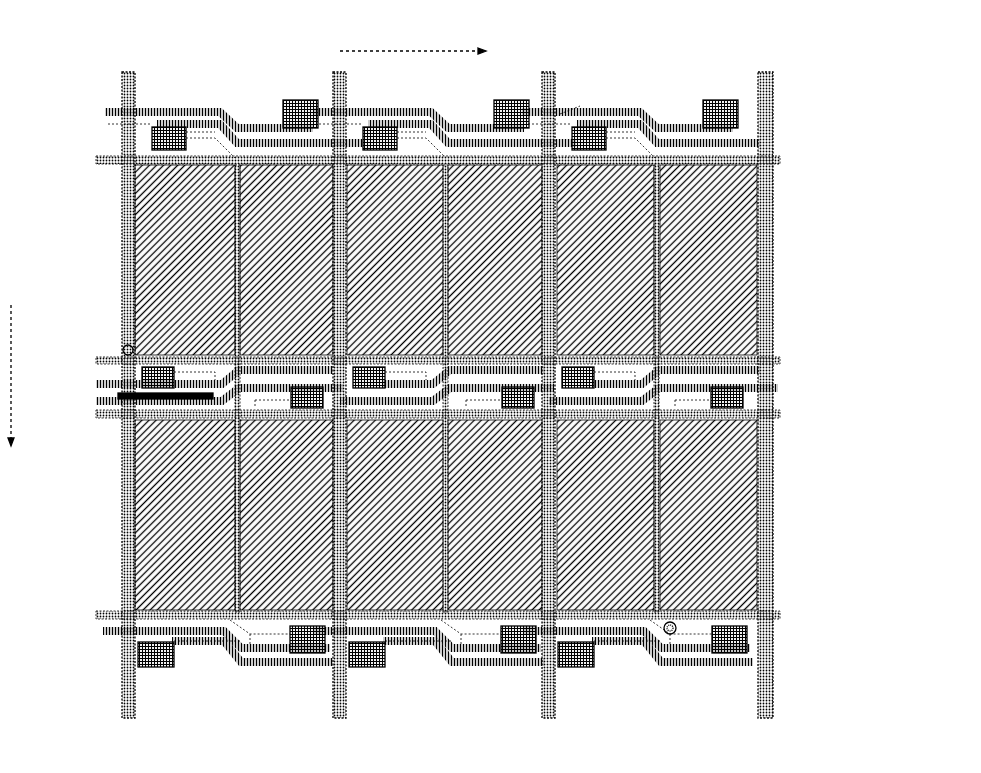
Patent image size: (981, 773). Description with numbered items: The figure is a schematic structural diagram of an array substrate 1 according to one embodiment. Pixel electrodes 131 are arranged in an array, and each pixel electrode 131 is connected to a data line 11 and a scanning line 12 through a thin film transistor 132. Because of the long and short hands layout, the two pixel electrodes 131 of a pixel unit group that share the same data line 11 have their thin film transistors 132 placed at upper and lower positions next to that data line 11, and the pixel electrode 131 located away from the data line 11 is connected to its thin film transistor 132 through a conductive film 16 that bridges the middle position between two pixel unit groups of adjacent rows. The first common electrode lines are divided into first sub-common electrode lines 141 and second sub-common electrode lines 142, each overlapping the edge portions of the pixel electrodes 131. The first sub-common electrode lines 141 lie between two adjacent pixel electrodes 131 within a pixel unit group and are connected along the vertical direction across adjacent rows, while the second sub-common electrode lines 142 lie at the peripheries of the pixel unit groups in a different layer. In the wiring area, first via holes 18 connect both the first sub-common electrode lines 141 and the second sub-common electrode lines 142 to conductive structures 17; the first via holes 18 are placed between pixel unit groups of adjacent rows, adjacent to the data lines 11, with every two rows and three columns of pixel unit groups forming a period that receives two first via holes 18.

The array substrate 1 is at (680, 38).
The data line 11 is at (137, 79).
The scanning line 12 is at (106, 115).
The pixel electrode 131 is at (122, 226).
The thin film transistor 132 is at (310, 106).
The first sub-common electrode line 141 is at (775, 255).
The second sub-common electrode line 142 is at (778, 159).
The conductive film 16 is at (440, 110).
The conductive structure 17 is at (100, 411).
The first via hole 18 is at (122, 347).